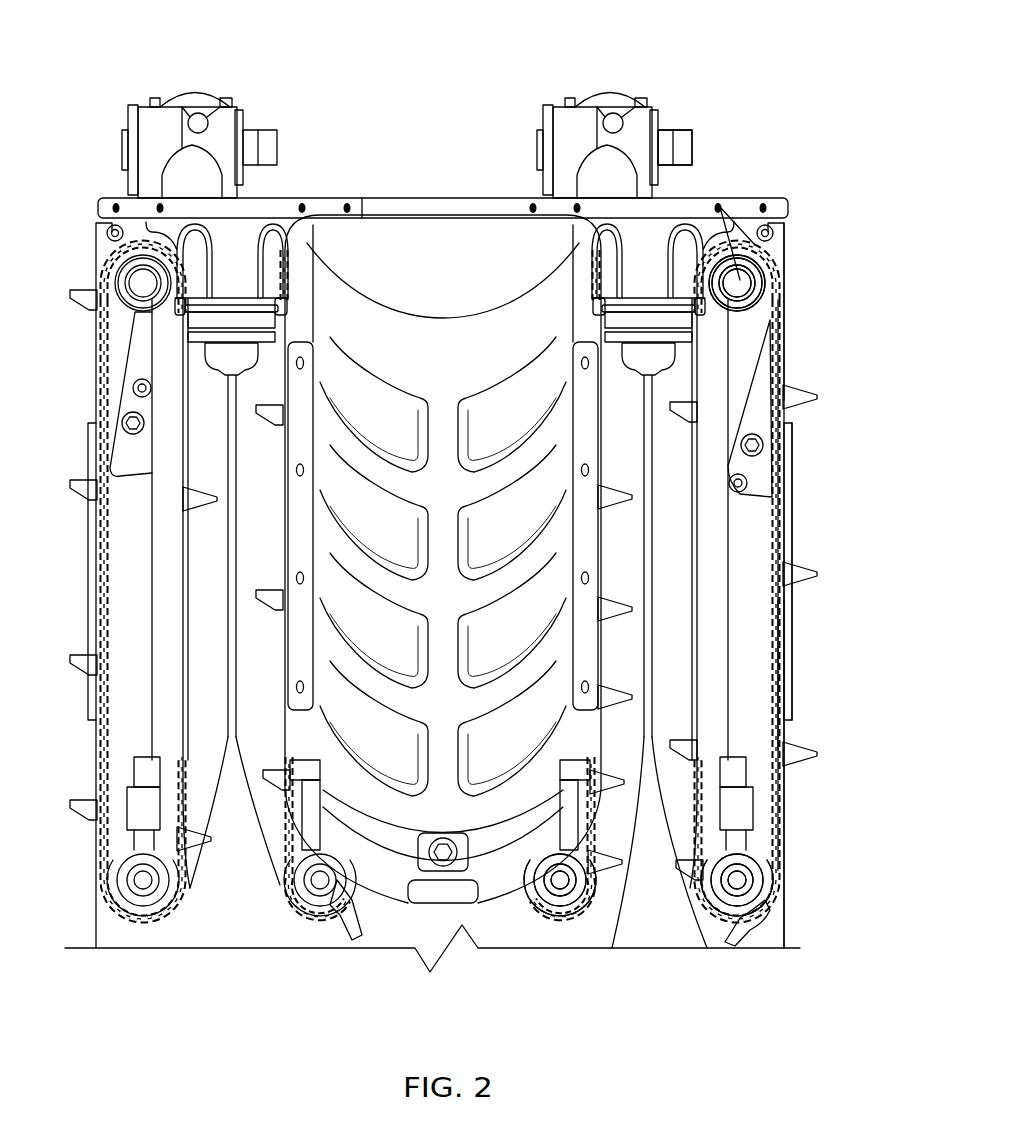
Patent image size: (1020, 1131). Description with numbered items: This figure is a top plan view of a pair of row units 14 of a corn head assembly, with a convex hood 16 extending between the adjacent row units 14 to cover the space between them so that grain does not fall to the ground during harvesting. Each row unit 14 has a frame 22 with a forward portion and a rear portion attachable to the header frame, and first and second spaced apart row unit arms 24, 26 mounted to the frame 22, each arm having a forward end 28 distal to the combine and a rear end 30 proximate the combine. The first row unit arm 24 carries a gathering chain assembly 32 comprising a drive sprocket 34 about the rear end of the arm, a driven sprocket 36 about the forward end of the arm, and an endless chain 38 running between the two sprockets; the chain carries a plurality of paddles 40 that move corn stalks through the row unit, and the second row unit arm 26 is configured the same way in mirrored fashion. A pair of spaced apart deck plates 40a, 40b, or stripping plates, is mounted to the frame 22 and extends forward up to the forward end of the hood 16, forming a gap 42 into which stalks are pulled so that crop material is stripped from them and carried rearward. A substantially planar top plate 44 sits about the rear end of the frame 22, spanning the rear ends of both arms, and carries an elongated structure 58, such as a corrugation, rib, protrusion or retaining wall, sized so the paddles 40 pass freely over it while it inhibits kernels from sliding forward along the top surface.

The row unit 14 is at (750, 85).
The hood 16 is at (430, 220).
The frame 22 is at (667, 190).
The first row unit arm 24 is at (757, 933).
The second row unit arm 26 is at (582, 926).
The forward end 28 is at (796, 838).
The rear end 30 is at (792, 247).
The gathering chain assembly 32 is at (792, 478).
The drive sprocket 34 is at (738, 277).
The driven sprocket 36 is at (737, 880).
The endless chain 38 is at (777, 662).
The paddles 40 is at (782, 575).
The deck plate 40a is at (635, 865).
The deck plate 40b is at (672, 875).
The gap 42 is at (648, 775).
The top plate 44 is at (328, 197).
The structure 58 is at (265, 237).